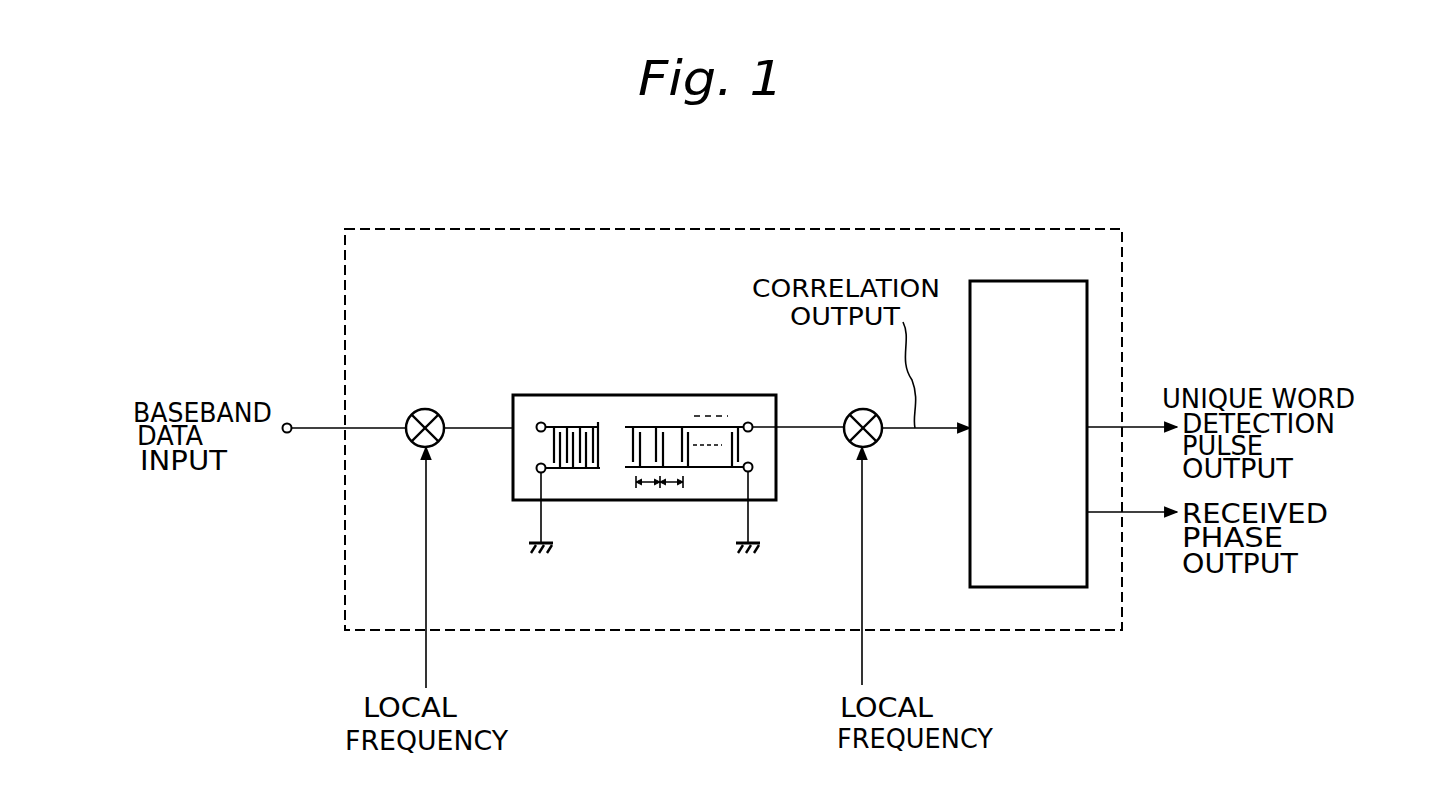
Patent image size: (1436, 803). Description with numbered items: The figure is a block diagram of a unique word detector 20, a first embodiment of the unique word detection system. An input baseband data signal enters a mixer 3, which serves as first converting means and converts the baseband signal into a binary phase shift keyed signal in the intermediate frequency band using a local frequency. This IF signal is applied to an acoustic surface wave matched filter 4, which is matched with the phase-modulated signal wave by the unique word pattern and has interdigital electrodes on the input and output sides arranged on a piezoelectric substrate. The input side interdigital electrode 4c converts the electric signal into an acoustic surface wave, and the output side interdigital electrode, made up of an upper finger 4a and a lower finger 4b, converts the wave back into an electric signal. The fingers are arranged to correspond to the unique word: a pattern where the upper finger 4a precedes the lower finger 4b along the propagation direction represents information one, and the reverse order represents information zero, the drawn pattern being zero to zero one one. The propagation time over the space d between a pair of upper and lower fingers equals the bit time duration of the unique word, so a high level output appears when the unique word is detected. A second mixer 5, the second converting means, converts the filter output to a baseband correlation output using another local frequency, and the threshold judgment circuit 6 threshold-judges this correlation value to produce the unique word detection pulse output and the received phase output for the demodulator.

The mixer 3 is at (428, 408).
The acoustic surface wave matched filter 4 is at (640, 395).
The upper finger 4a is at (708, 427).
The lower finger 4b is at (700, 467).
The input side interdigital electrode 4c is at (566, 427).
The mixer 5 is at (855, 409).
The threshold judgment circuit 6 is at (1030, 281).
The unique word detector 20 is at (558, 630).
The space between a pair of the upper and lower fingers d is at (650, 490).